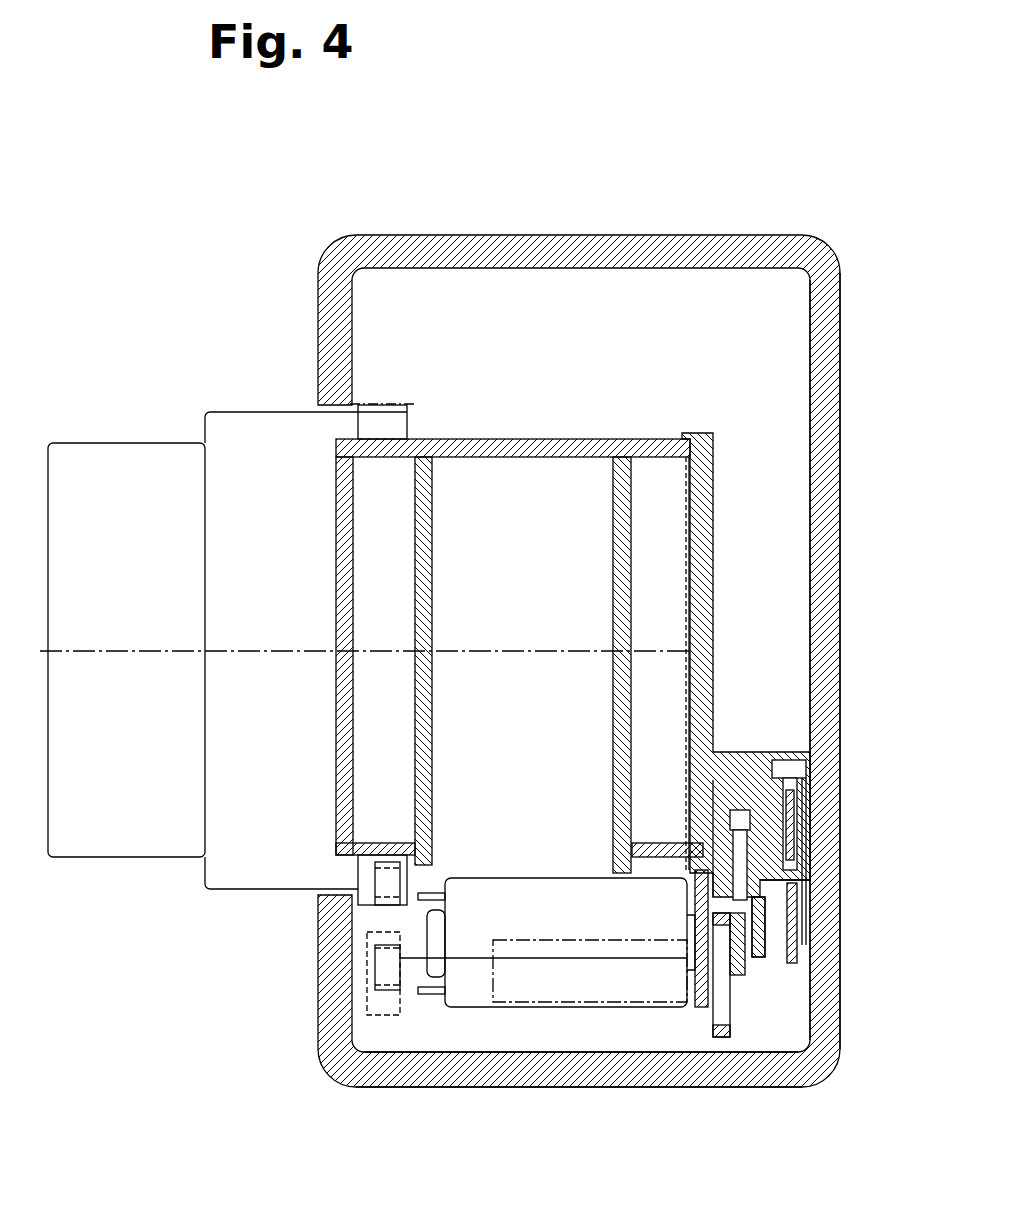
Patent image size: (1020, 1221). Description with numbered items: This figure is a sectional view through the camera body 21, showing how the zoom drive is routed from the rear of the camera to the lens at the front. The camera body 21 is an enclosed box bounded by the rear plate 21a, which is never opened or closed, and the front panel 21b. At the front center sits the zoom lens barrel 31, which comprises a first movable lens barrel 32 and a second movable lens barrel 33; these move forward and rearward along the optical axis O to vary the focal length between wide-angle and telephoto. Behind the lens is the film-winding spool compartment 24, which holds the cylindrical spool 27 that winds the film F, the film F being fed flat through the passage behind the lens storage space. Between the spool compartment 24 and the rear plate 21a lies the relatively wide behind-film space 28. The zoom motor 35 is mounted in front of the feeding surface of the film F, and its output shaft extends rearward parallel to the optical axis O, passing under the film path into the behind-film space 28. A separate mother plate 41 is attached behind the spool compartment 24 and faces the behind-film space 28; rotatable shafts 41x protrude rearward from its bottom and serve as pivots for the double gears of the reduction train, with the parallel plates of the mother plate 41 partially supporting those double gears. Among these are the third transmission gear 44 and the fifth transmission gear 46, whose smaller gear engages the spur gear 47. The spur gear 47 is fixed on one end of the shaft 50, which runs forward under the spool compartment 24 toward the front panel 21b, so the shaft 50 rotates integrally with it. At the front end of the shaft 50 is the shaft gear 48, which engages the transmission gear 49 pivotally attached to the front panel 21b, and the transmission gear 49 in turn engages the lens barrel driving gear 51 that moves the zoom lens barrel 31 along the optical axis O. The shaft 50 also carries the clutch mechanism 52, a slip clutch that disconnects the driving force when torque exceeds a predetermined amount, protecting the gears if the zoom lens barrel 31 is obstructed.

The camera body 21 is at (542, 237).
The rear plate 21a is at (835, 465).
The front panel 21b is at (320, 985).
The behind-film space 28 is at (767, 620).
The zoom lens barrel 31 is at (203, 592).
The first movable lens barrel 32 is at (147, 497).
The second movable lens barrel 33 is at (228, 467).
The optical axis O is at (108, 650).
The film-winding spool compartment 24 is at (390, 527).
The spool 27 is at (618, 475).
The film F is at (686, 505).
The lens barrel driving gear 51 is at (405, 398).
The mother plate 41 is at (740, 752).
The rotatable shafts 41x is at (797, 870).
The third transmission gear 44 is at (797, 918).
The fifth transmission gear 46 is at (745, 965).
The spur gear 47 is at (718, 1010).
The zoom motor 35 is at (648, 945).
The shaft 50 is at (465, 990).
The clutch mechanism 52 is at (572, 1000).
The transmission gear 49 is at (380, 912).
The shaft gear 48 is at (318, 1048).